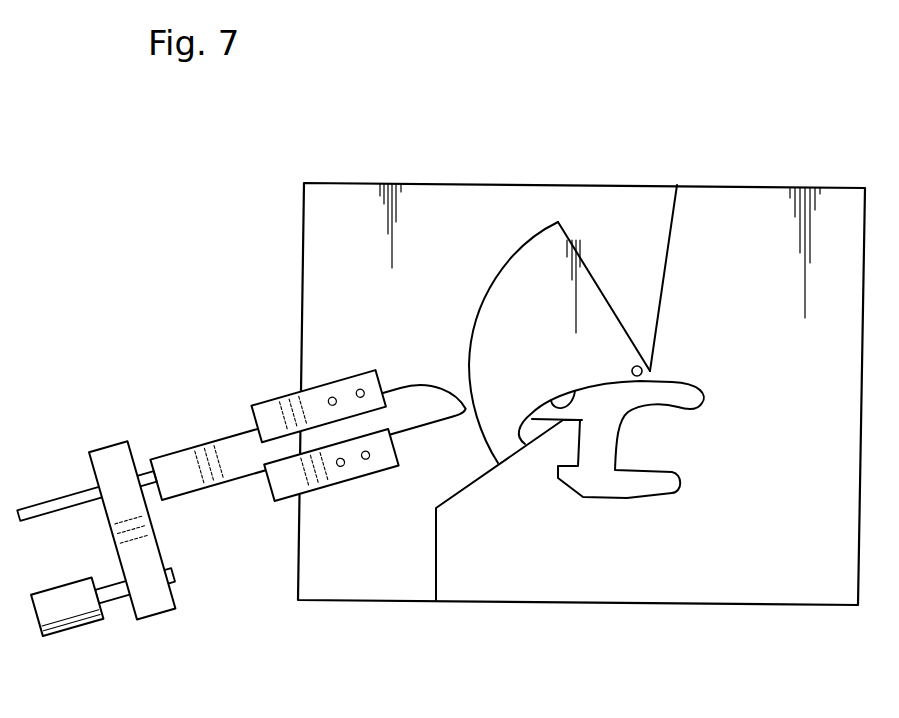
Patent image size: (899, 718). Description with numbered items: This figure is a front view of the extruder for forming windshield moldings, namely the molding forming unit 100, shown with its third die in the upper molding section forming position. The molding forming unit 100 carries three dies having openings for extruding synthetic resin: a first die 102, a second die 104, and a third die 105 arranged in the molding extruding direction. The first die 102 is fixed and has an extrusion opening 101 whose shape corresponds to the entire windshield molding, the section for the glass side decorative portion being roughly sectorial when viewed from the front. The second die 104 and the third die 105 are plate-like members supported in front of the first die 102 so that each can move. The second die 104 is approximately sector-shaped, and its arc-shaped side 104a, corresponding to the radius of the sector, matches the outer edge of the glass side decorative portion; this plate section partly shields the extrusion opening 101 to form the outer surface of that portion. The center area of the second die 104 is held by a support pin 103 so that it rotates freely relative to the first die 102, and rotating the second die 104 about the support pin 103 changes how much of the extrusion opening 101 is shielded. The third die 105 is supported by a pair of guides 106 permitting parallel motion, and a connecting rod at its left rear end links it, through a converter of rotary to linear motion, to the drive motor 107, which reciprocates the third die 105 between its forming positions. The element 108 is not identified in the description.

The molding forming unit 100 is at (798, 183).
The extrusion opening 101 is at (598, 483).
The first die 102 is at (758, 587).
The support pin 103 is at (652, 372).
The second die 104 is at (592, 300).
The arc-shaped side 104a is at (565, 397).
The third die 105 is at (412, 403).
The guides 106 is at (273, 420).
The drive motor 107 is at (82, 607).
The slide block 108 is at (118, 468).